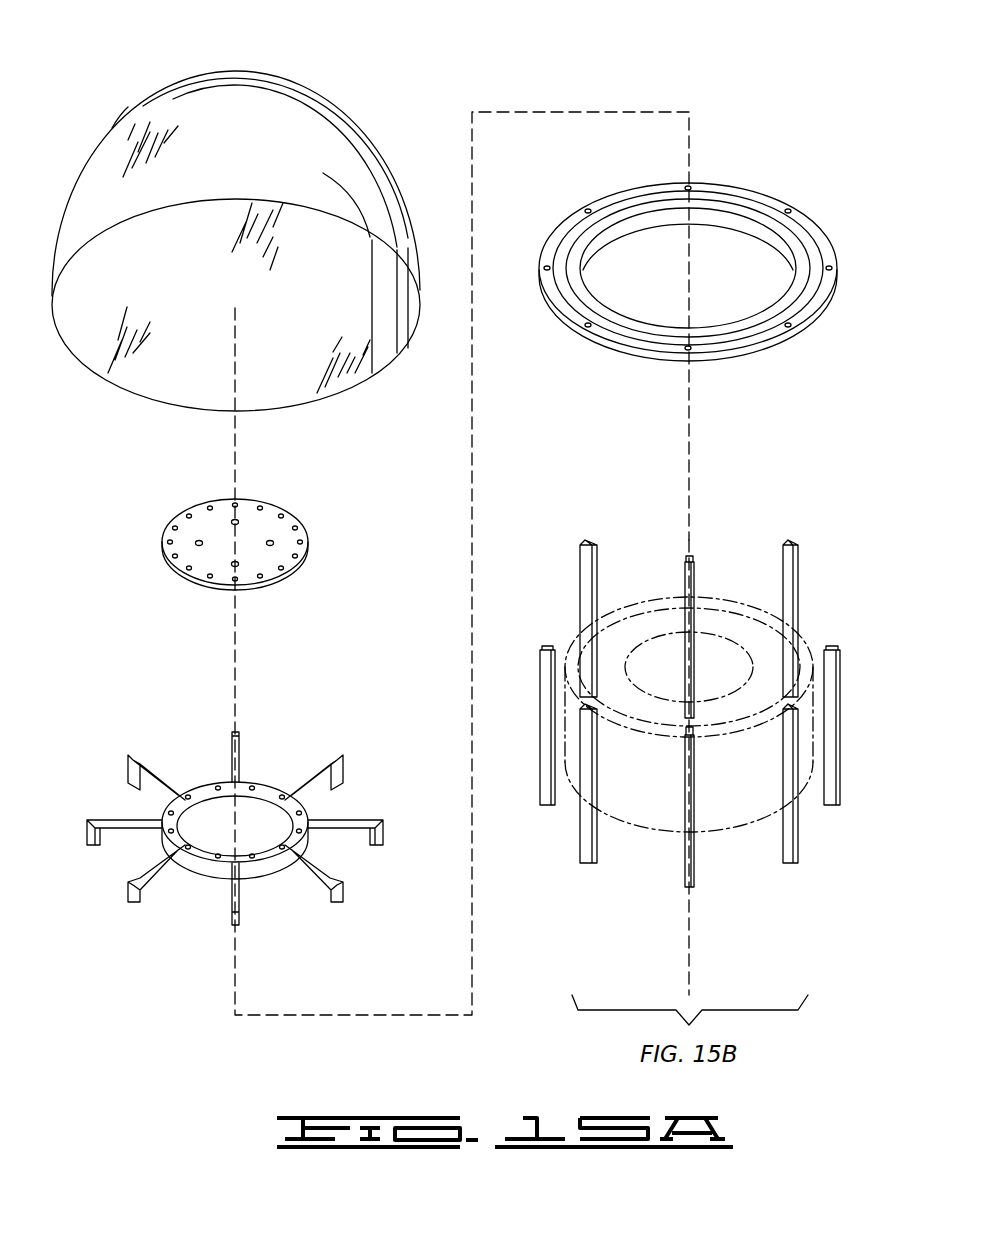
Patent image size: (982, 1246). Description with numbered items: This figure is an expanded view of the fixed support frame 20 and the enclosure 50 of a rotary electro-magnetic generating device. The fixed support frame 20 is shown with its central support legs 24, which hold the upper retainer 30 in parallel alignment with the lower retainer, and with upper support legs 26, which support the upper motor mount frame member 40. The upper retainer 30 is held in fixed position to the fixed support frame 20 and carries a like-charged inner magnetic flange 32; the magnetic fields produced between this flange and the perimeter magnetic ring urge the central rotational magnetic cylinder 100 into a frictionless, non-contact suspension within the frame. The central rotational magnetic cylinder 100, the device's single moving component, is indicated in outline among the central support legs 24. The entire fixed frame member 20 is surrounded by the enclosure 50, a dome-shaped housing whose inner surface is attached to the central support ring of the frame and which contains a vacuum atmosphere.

In FIG. 15A, the fixed support frame 20 is at (741, 98).
In FIG. 15B, the central support legs 24 is at (585, 545).
In FIG. 15A, the upper support legs 26 is at (112, 820).
In FIG. 15A, the upper retainer 30 is at (745, 352).
In FIG. 15A, the inner magnetic flange 32 is at (754, 218).
In FIG. 15A, the upper motor mount frame member 40 is at (172, 527).
In FIG. 15A, the enclosure 50 is at (156, 90).
In FIG. 15B, the central rotational magnetic cylinder 100 is at (652, 820).